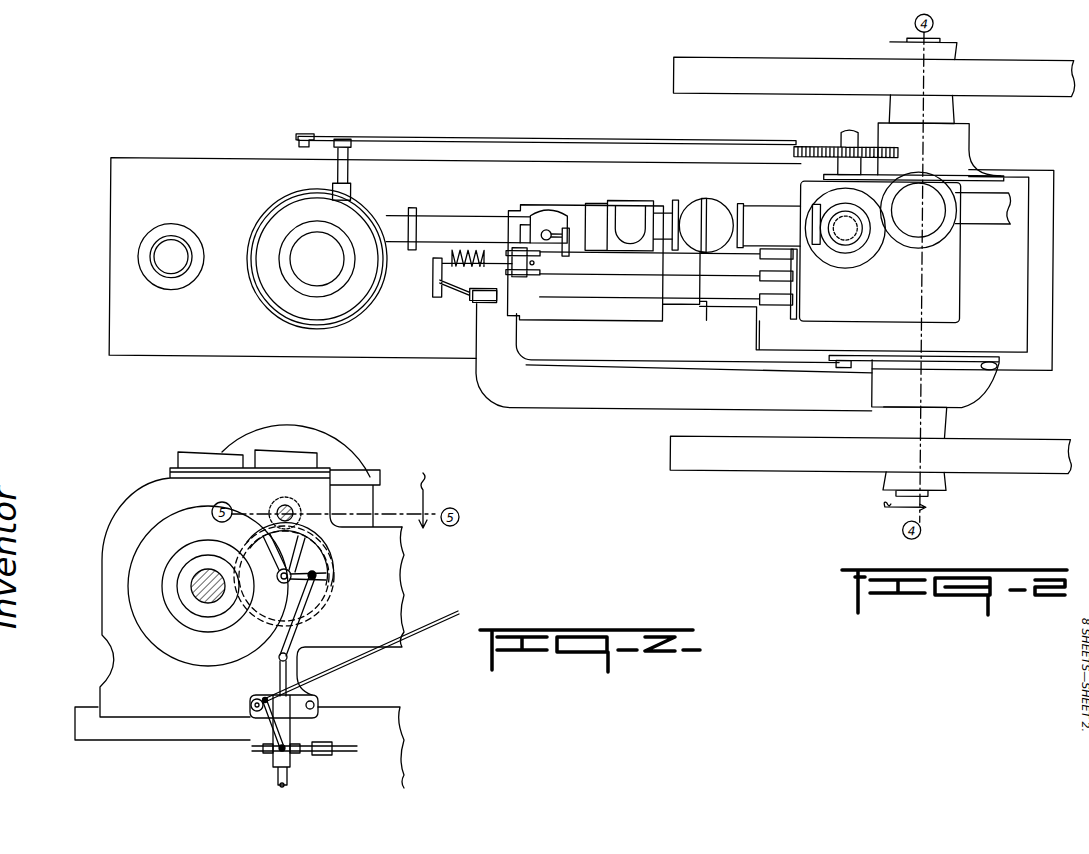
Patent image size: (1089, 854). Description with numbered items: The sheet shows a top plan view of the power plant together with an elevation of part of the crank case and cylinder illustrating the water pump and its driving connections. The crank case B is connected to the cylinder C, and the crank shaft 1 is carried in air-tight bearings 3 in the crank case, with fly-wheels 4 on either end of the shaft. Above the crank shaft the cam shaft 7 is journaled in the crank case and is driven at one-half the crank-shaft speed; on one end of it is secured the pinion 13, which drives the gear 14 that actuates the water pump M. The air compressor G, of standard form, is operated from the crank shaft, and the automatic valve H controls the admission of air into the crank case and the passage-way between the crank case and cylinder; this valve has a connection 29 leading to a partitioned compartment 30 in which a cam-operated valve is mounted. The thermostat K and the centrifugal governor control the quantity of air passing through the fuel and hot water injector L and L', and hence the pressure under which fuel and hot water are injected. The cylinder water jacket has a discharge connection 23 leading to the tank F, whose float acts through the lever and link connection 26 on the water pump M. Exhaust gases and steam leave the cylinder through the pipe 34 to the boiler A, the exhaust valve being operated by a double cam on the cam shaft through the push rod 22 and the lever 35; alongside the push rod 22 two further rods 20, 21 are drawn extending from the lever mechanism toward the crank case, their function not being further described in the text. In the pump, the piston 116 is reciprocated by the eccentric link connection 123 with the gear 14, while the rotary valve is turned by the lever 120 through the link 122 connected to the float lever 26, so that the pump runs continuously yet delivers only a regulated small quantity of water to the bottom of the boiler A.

In FIG. 3, the crank shaft 1 is at (928, 493).
In FIG. 2, the crank shaft 1 is at (205, 597).
In FIG. 3, the bearings 3 is at (1010, 392).
In FIG. 3, the fly-wheels 4 is at (1060, 481).
In FIG. 3, the cam shaft 7 is at (843, 365).
In FIG. 2, the pinion 13 is at (292, 518).
In FIG. 3, the gear 14 is at (808, 144).
In FIG. 2, the gear 14 is at (322, 563).
In FIG. 3, the control rod 20 is at (643, 261).
In FIG. 3, the control rod 21 is at (612, 272).
In FIG. 3, the push rod 22 is at (688, 299).
In FIG. 3, the discharge connection 23 is at (455, 223).
In FIG. 3, the lever and link connection 26 is at (312, 138).
In FIG. 3, the connection 29 is at (752, 219).
In FIG. 3, the partitioned compartment 30 is at (620, 200).
In FIG. 3, the pipe or connection 34 is at (672, 350).
In FIG. 3, the lever 35 is at (433, 287).
In FIG. 2, the piston 116 is at (280, 677).
In FIG. 2, the lever 120 is at (262, 737).
In FIG. 3, the link 122 is at (415, 140).
In FIG. 2, the link 122 is at (432, 621).
In FIG. 2, the eccentric link connection 123 is at (298, 629).
In FIG. 3, the water heater or boiler A is at (437, 359).
In FIG. 2, the water heater or boiler A is at (75, 737).
In FIG. 3, the crank case B is at (1050, 274).
In FIG. 2, the crank case B is at (102, 566).
In FIG. 3, the cylinder C is at (585, 318).
In FIG. 3, the tank F is at (370, 325).
In FIG. 3, the air compressor G is at (925, 235).
In FIG. 3, the automatic valve H is at (845, 252).
In FIG. 3, the thermostat K is at (570, 240).
In FIG. 3, the fuel and hot water injector L is at (531, 271).
In FIG. 3, the fuel and hot water injector L' is at (544, 214).
In FIG. 2, the water pump M is at (290, 727).